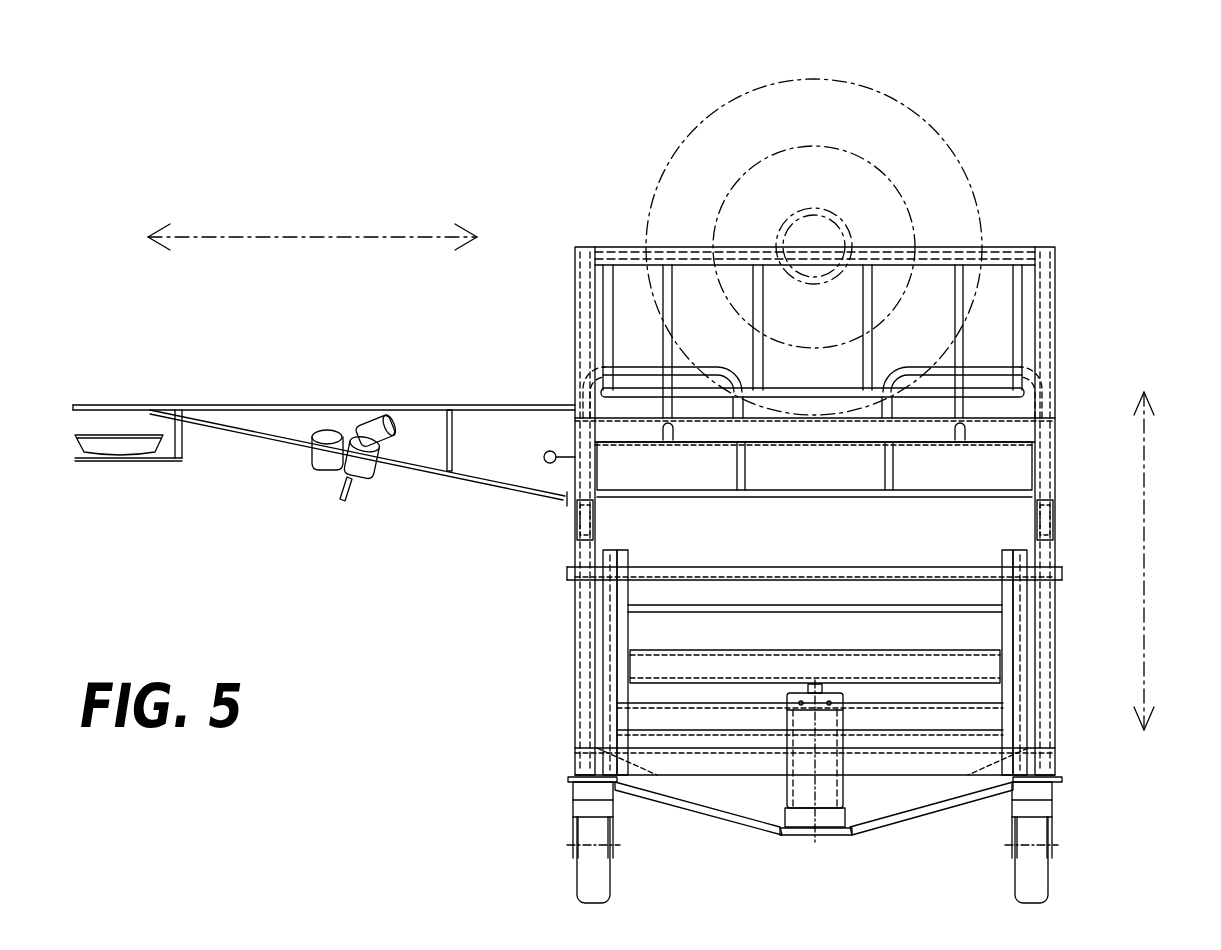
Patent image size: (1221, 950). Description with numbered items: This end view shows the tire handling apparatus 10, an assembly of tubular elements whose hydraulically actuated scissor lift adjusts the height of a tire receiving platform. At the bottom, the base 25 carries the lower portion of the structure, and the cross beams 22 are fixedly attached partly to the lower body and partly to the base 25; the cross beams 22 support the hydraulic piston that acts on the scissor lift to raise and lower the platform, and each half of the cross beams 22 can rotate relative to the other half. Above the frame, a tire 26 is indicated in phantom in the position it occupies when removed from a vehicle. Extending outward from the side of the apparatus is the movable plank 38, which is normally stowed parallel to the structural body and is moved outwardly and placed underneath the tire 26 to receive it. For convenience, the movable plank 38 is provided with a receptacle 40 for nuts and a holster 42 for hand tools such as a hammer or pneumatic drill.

The tire handling apparatus 10 is at (1141, 390).
The cross beams 22 is at (738, 830).
The base 25 is at (573, 760).
The tire 26 is at (950, 143).
The movable plank 38 is at (415, 392).
The receptacle 40 is at (132, 452).
The holster 42 is at (327, 467).